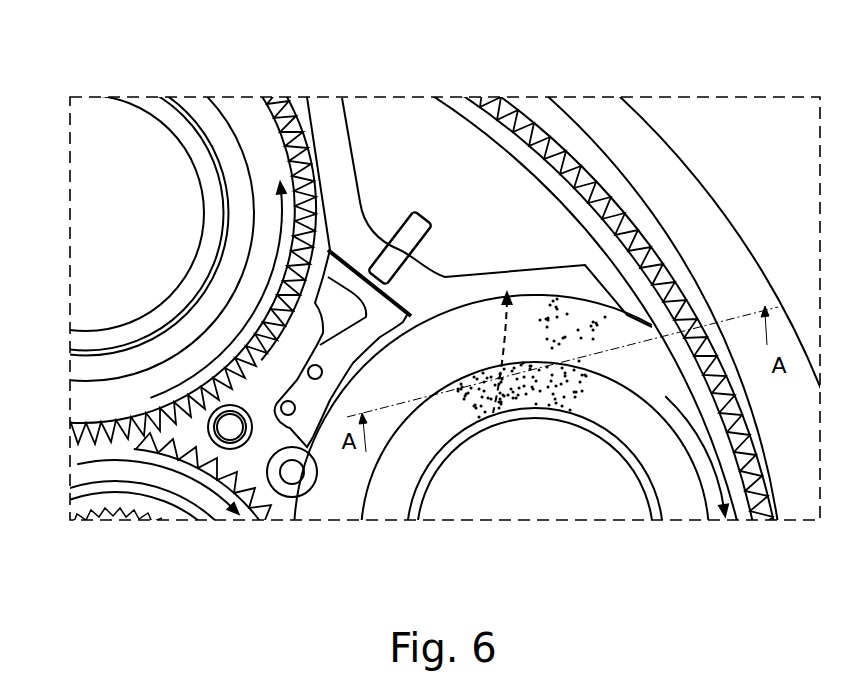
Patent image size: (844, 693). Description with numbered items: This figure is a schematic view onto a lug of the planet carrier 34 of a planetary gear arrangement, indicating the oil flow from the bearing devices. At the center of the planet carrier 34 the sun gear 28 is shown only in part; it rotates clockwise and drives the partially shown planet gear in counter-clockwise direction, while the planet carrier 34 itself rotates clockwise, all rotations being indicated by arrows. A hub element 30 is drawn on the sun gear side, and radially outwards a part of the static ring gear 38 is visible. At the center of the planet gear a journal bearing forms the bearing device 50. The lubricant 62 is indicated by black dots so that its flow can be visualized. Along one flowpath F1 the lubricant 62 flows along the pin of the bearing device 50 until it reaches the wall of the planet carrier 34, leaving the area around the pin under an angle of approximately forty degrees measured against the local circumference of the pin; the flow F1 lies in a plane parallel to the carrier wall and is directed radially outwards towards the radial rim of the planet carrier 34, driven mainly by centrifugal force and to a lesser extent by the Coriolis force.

The sun gear 28 is at (78, 472).
The hub bearing 30 is at (76, 360).
The planet carrier 34 is at (505, 287).
The static ring gear 38 is at (582, 145).
The bearing device 50 is at (256, 118).
The lubricant 62 is at (547, 423).
The flowpath F1 is at (482, 480).